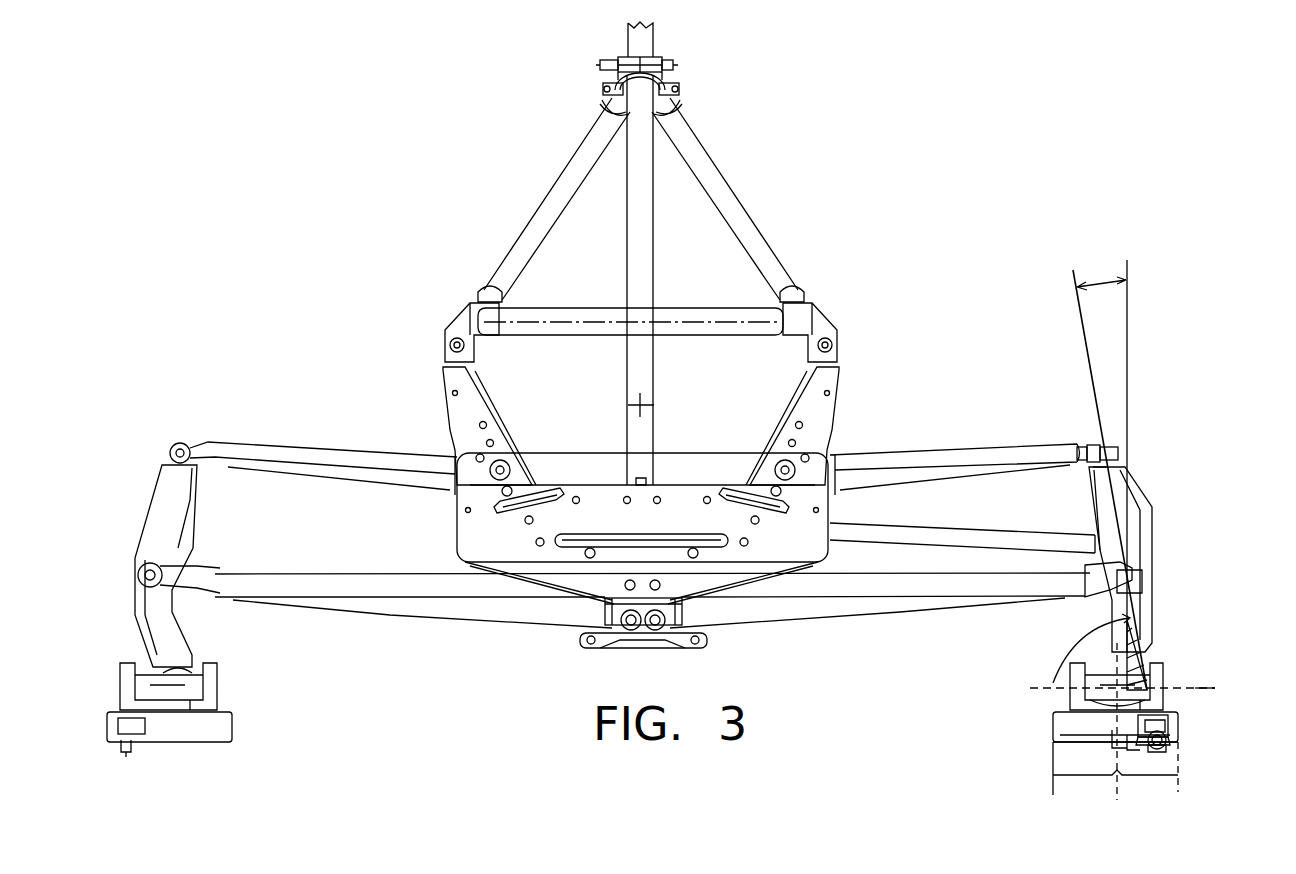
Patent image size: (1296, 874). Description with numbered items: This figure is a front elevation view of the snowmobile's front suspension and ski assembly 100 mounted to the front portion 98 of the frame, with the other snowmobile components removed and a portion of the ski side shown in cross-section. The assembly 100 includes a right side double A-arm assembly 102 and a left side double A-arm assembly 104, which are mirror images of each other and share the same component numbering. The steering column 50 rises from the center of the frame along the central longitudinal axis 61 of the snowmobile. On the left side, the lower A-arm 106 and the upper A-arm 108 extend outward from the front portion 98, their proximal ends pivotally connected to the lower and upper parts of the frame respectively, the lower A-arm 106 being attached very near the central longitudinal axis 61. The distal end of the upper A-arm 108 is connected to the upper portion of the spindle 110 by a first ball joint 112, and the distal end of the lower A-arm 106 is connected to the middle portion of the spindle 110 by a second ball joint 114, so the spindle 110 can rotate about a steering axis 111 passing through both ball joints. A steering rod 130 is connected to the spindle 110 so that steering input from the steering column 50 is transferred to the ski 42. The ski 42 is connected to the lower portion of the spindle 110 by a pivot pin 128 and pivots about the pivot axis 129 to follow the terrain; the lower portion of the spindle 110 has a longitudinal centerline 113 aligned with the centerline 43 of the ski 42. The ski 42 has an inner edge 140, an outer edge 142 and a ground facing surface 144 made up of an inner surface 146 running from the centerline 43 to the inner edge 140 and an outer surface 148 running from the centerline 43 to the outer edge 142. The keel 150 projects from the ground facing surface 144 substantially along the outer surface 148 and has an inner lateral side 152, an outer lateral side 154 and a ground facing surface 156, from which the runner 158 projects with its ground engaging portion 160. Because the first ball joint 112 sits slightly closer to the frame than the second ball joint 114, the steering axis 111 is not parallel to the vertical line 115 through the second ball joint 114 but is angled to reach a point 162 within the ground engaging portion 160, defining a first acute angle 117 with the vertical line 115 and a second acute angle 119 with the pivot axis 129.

The steering column 50 is at (650, 38).
The central longitudinal axis 61 is at (645, 403).
The front portion of frame 98 is at (500, 526).
The front suspension and ski assembly 100 is at (1011, 231).
The right side double A-arm assembly 102 is at (309, 380).
The left side double A-arm assembly 104 is at (1031, 490).
The lower A-arm 106 is at (890, 585).
The upper A-arm 108 is at (1008, 456).
The spindle 110 is at (1150, 540).
The steering axis 111 is at (1085, 352).
The first ball joint 112 is at (1127, 440).
The longitudinal centerline 113 is at (1145, 645).
The second ball joint 114 is at (1140, 568).
The vertical line 115 is at (1130, 295).
The first acute angle 117 is at (1100, 282).
The second acute angle 119 is at (1080, 643).
The pivot pin 128 is at (1058, 692).
The pivot axis 129 is at (1032, 678).
The steering rod 130 is at (1010, 545).
The inner edge 140 is at (1053, 728).
The outer edge 142 is at (1190, 700).
The ground facing surface 144 is at (1075, 742).
The inner surface 146 is at (1090, 775).
The centerline 43 is at (1117, 778).
The ski 42 is at (1013, 728).
The outer surface 148 is at (1160, 752).
The keel 150 is at (1172, 718).
The inner lateral side 152 is at (1128, 748).
The outer lateral side 154 is at (1172, 725).
The ground facing surface 156 is at (1150, 750).
The runner 158 is at (1170, 735).
The ground engaging portion 160 is at (1165, 742).
The point 162 is at (1160, 748).